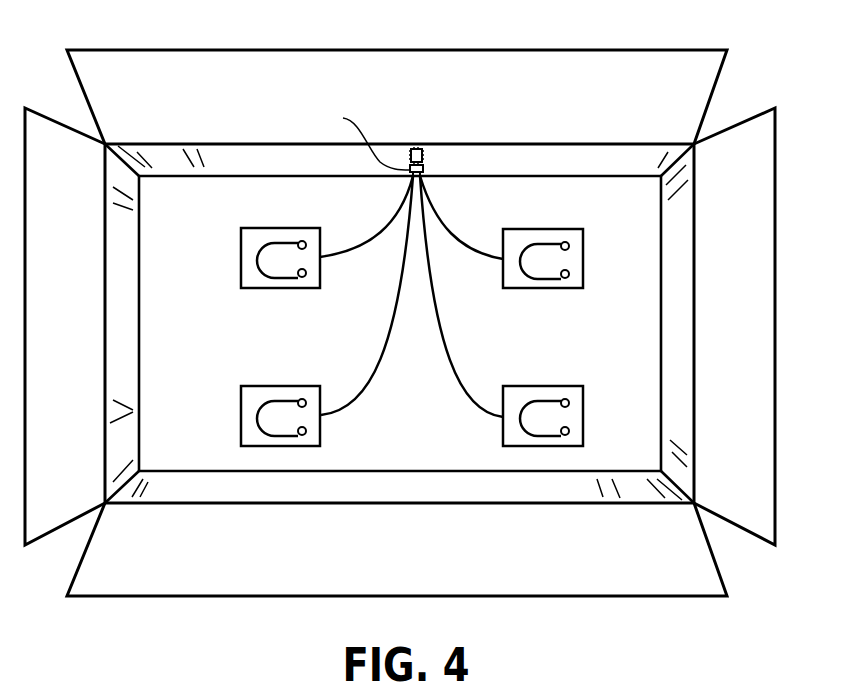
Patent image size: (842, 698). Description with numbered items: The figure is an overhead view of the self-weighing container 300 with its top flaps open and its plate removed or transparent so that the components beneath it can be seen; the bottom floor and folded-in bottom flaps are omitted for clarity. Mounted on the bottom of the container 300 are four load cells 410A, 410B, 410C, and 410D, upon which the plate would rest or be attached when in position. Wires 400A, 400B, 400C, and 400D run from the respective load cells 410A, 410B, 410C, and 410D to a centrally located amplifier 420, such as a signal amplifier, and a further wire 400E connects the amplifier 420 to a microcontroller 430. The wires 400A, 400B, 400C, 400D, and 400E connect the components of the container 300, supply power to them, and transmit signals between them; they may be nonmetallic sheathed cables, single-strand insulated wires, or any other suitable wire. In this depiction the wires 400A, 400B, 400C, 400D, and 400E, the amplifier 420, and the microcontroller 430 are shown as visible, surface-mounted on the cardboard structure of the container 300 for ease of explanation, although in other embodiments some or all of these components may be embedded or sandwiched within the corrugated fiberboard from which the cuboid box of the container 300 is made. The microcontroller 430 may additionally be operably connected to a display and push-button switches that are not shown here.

The container 300 is at (177, 50).
The wire 400A is at (377, 357).
The wire 400B is at (457, 365).
The wire 400C is at (370, 240).
The wire 400D is at (452, 235).
The wire 400E is at (347, 138).
The load cell 410A is at (249, 289).
The load cell 410B is at (241, 418).
The load cell 410C is at (583, 424).
The load cell 410D is at (567, 290).
The amplifier 420 is at (423, 169).
The microcontroller 430 is at (418, 148).